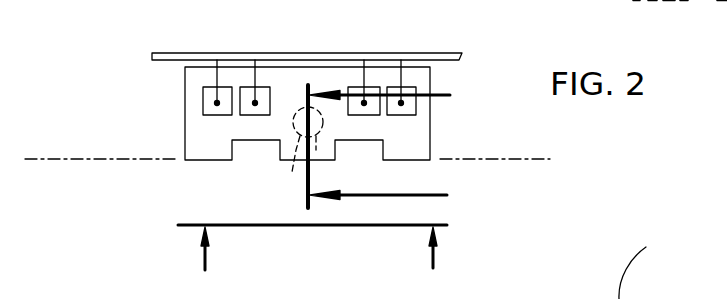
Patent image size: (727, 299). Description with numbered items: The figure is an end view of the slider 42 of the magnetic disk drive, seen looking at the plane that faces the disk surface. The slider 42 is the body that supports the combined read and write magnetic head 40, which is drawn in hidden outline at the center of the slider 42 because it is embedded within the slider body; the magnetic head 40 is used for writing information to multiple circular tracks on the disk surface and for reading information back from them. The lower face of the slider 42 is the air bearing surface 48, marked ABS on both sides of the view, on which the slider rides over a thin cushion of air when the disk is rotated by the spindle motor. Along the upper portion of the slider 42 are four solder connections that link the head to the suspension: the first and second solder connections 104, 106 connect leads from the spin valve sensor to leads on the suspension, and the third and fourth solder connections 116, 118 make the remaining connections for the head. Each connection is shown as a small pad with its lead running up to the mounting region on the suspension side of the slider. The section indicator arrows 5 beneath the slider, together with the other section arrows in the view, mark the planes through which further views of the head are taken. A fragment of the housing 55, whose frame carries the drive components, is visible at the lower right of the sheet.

The slider 42 is at (185, 100).
The first solder connection 104 is at (202, 88).
The third solder connection 116 is at (238, 88).
The fourth solder connection 118 is at (347, 88).
The second solder connection 106 is at (386, 88).
The magnetic head 40 is at (292, 172).
The air bearing surface 48 is at (75, 160).
The housing 55 is at (646, 264).
The section line 5 is at (312, 262).